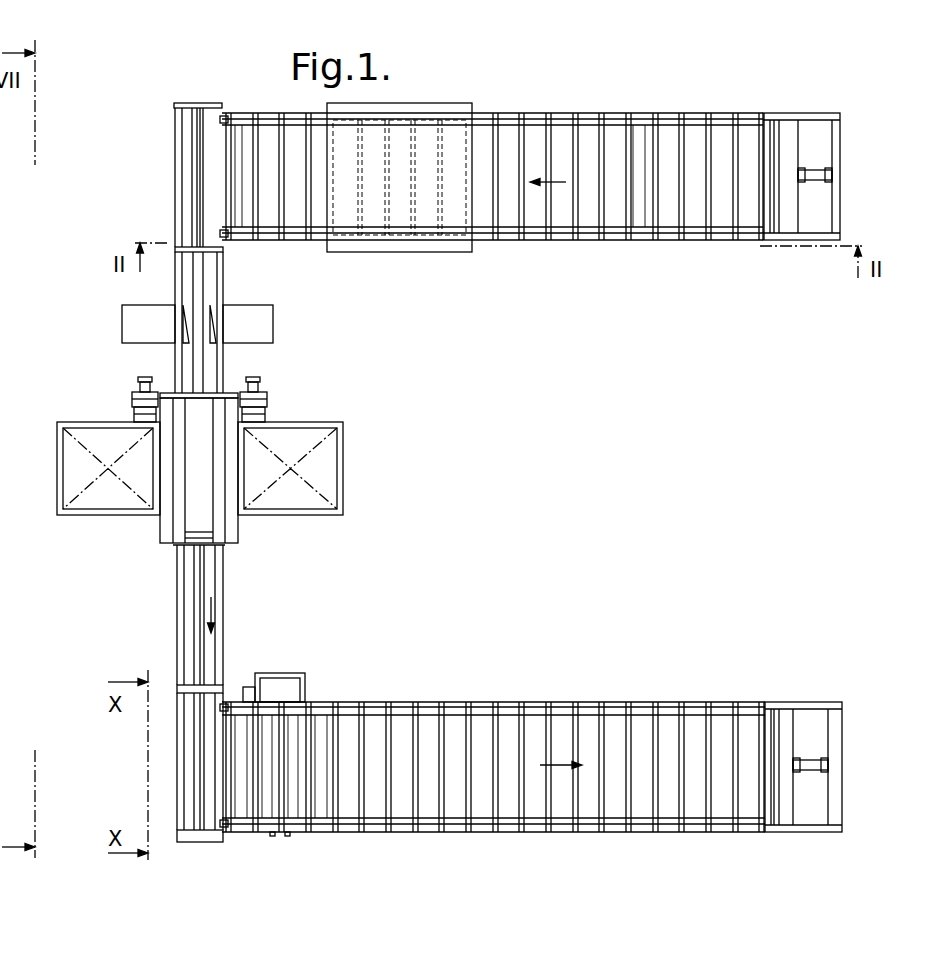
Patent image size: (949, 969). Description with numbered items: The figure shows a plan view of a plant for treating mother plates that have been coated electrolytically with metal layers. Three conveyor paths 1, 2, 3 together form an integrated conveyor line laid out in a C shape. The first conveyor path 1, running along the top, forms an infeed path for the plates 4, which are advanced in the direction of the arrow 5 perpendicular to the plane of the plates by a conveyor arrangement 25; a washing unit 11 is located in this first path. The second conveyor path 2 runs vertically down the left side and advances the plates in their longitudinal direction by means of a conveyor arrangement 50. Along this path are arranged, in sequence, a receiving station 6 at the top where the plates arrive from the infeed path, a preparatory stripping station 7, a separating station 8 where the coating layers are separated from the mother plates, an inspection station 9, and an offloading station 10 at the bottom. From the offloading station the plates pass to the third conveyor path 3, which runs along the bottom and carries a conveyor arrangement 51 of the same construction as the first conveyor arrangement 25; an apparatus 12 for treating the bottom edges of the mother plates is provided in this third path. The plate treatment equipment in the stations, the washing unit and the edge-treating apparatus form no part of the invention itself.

The conveyor path 1 is at (568, 98).
The conveyor path 2 is at (265, 376).
The conveyor path 3 is at (521, 689).
The plates 4 is at (685, 150).
The arrow 5 is at (563, 182).
The receiving station 6 is at (160, 162).
The preparatory stripping station 7 is at (158, 287).
The separating station 8 is at (134, 527).
The inspection station 9 is at (142, 615).
The offloading station 10 is at (134, 772).
The washing unit 11 is at (440, 103).
The apparatus for treating the bottom edges 12 is at (288, 685).
The conveyor arrangement 25 is at (622, 113).
The conveyor arrangement 50 is at (202, 283).
The conveyor arrangement 51 is at (645, 700).